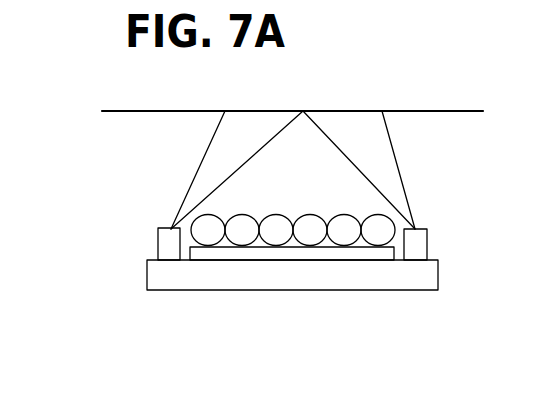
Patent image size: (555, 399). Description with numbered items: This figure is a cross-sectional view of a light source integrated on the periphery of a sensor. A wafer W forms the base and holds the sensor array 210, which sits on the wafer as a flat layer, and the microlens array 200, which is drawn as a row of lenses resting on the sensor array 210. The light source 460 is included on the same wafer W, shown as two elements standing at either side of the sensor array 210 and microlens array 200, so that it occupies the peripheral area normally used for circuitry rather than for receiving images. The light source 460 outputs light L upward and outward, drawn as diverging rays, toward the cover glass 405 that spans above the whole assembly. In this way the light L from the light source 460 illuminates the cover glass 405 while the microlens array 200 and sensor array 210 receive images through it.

The cover glass 405 is at (113, 111).
The light L is at (218, 158).
The light source 460 is at (157, 252).
The sensor array 210 is at (340, 252).
The microlens array 200 is at (280, 233).
The wafer W is at (212, 290).